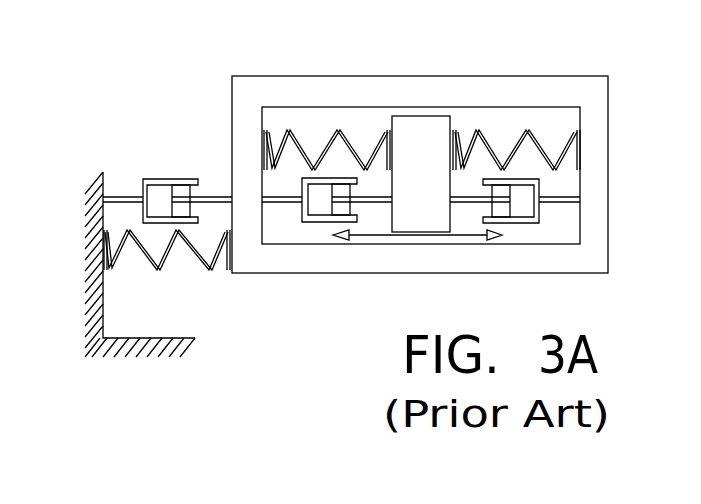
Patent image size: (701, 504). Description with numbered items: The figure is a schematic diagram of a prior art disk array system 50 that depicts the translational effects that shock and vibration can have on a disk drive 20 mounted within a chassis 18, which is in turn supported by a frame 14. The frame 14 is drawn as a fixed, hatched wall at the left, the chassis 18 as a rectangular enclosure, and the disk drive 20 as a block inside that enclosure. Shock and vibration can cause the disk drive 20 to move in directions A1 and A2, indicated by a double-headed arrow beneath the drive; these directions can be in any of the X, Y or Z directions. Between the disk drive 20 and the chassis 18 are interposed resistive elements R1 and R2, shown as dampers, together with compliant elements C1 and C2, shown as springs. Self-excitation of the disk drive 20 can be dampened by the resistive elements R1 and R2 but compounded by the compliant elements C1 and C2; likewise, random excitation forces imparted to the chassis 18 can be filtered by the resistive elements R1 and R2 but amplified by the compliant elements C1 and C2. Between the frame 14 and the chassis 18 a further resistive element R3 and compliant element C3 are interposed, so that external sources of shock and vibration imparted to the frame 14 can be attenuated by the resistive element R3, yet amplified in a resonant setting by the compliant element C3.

The vibration isolation system (prior art) 50 is at (84, 44).
The frame 14 is at (101, 262).
The chassis 18 is at (606, 180).
The disk drive 20 is at (421, 119).
The resistive element R1 is at (312, 222).
The resistive element R2 is at (532, 222).
The resistive element R3 is at (163, 179).
The compliant element C1 is at (293, 137).
The compliant element C2 is at (478, 136).
The compliant element C3 is at (158, 271).
The direction A1 is at (375, 226).
The direction A2 is at (460, 226).